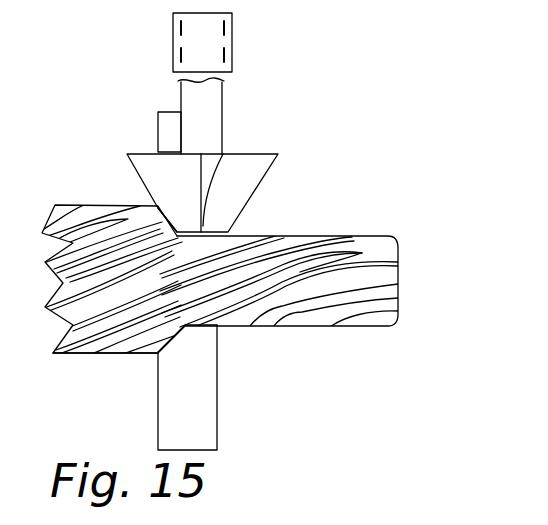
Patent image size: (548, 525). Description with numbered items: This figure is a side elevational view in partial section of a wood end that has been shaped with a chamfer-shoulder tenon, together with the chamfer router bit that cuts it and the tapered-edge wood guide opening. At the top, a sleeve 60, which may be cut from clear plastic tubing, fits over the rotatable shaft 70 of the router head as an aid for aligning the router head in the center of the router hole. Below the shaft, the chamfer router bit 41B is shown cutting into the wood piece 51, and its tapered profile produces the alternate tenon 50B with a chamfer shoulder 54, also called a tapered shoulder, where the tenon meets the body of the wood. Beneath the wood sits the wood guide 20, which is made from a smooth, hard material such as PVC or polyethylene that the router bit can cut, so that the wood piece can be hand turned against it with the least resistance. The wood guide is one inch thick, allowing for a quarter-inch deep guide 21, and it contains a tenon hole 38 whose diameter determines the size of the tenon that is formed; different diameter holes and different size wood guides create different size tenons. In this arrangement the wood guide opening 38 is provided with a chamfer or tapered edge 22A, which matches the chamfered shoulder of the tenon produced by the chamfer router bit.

The sleeve 60 is at (172, 63).
The rotatable shaft 70 is at (222, 117).
The chamfer router bit 41B is at (248, 198).
The chamfer shoulder 54 is at (175, 212).
The wood piece 51 is at (104, 205).
The alternate tenon 50B is at (322, 236).
The wood guide 20 is at (217, 432).
The guide 21 is at (206, 328).
The tenon hole 38 is at (229, 333).
The chamfer edge 22A is at (172, 343).